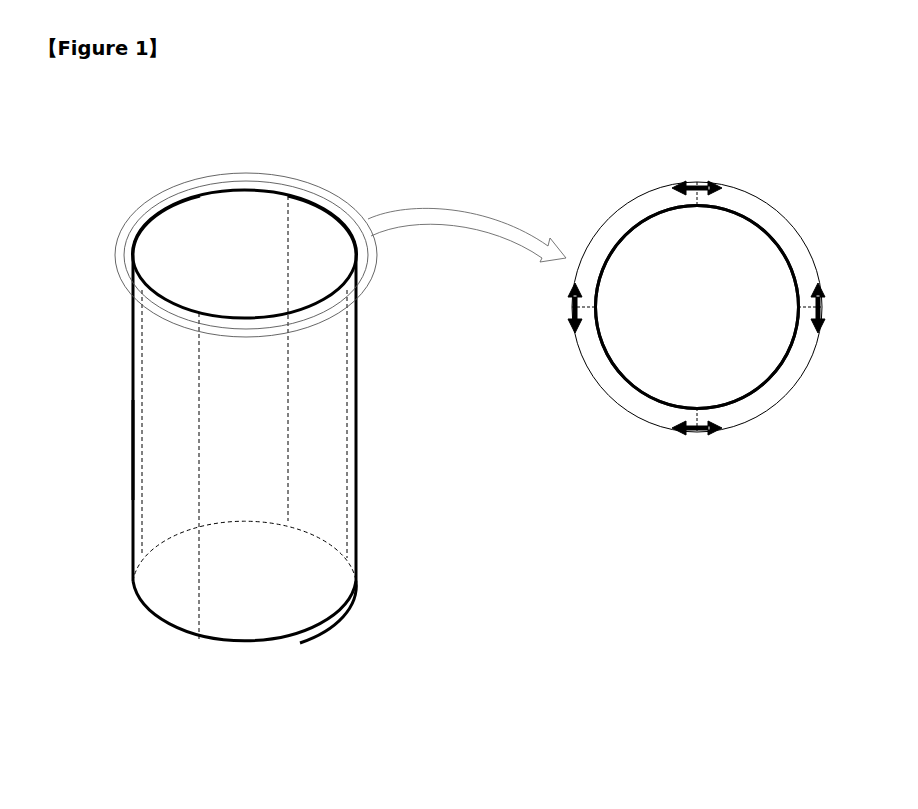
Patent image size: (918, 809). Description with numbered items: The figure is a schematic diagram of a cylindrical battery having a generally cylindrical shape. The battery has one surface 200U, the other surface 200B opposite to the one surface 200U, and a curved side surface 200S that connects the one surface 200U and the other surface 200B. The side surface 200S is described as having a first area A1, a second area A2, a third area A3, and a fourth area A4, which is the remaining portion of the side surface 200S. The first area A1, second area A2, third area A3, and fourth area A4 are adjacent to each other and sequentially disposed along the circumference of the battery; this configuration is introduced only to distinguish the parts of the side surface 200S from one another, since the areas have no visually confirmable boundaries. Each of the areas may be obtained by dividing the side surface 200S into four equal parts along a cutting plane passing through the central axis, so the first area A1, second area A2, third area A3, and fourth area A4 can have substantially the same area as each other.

The one surface 200U is at (243, 233).
The side surface 200S is at (358, 450).
The other surface 200B is at (247, 648).
The first area A1 is at (333, 203).
The second area A2 is at (178, 200).
The third area A3 is at (157, 440).
The fourth area A4 is at (307, 600).